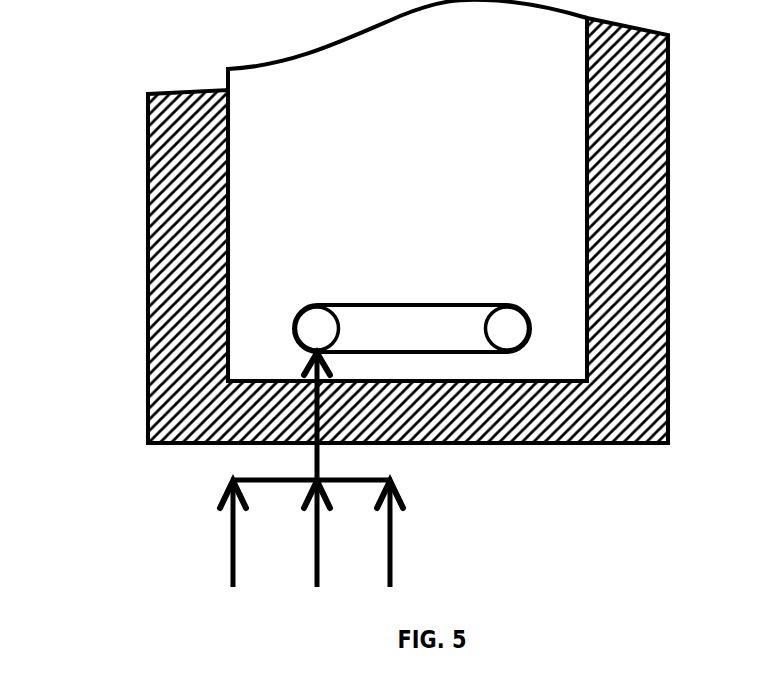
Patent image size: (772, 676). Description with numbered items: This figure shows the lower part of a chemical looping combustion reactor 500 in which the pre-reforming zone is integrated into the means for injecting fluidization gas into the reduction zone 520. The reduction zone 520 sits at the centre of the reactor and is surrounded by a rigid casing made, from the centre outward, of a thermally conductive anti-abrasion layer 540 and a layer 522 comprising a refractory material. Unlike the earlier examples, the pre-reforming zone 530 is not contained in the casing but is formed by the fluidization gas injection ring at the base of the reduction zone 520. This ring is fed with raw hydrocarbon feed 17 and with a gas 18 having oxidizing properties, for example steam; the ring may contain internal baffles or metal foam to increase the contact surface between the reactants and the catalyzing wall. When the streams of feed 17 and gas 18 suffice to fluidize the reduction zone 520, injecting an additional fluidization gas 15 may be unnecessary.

The reactor 500 is at (121, 44).
The layer comprising a refractory material 522 is at (148, 286).
The reduction zone 520 is at (407, 190).
The pre-reforming zone 530 is at (412, 328).
The thermally conductive layer 540 is at (404, 304).
The fluidization gas 15 is at (315, 547).
The raw hydrocarbon feed 17 is at (395, 573).
The gas with oxidizing properties 18 is at (230, 564).